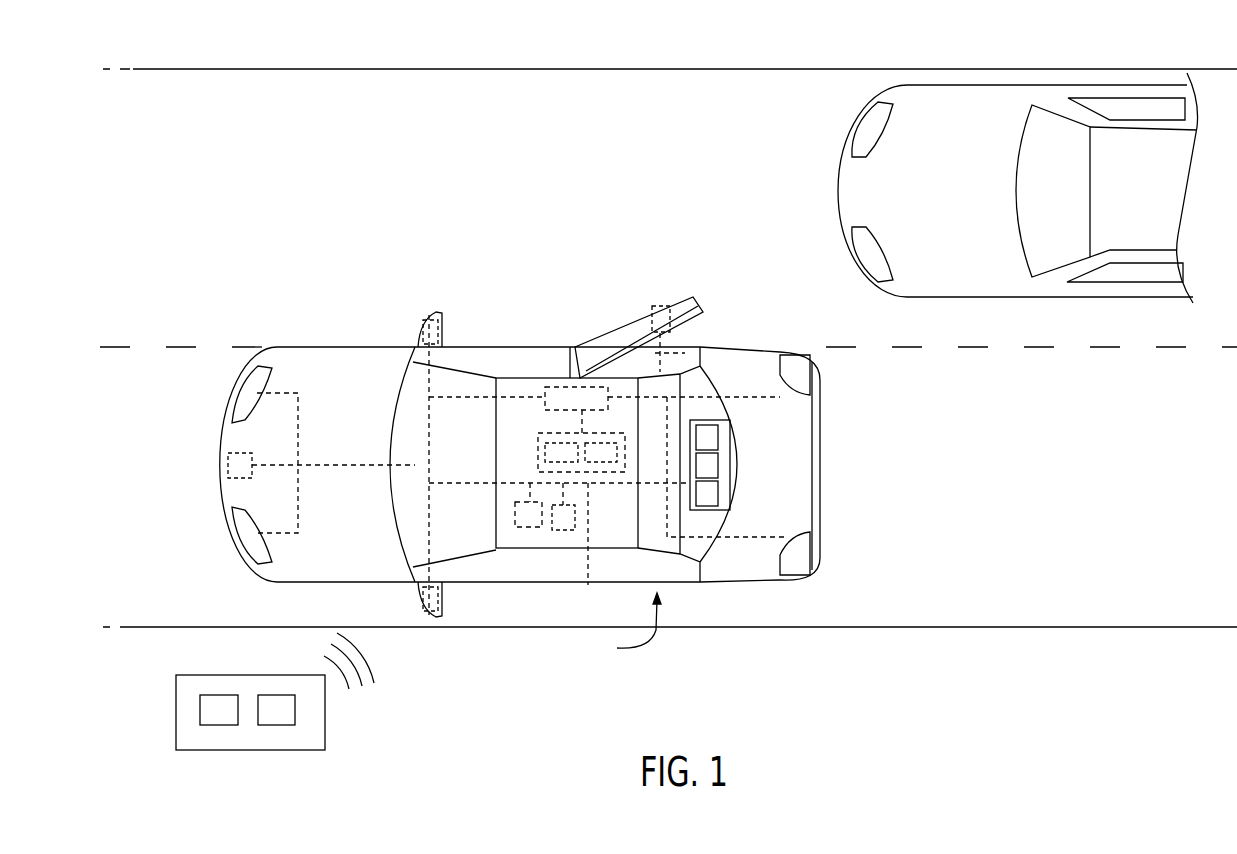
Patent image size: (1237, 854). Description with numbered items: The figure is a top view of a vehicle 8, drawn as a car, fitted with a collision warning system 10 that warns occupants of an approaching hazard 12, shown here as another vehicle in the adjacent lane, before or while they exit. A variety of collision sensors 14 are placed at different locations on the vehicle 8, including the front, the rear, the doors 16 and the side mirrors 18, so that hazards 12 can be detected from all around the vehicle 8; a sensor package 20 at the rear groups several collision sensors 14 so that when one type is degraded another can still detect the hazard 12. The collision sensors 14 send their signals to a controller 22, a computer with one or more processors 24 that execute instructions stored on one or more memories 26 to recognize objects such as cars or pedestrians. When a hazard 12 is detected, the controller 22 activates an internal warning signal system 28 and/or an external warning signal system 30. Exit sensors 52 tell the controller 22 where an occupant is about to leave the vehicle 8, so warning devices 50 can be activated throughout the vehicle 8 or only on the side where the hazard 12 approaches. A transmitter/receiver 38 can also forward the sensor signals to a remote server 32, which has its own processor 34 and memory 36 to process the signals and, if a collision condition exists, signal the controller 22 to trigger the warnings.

The vehicle 8 is at (515, 314).
The collision warning system 10 is at (628, 627).
The approaching hazard 12 is at (823, 132).
The collision sensors 14 is at (226, 466).
The door 16 is at (630, 328).
The side mirror 18 is at (432, 316).
The sensor package 20 is at (725, 418).
The controller 22 is at (587, 548).
The processor 24 is at (545, 447).
The memory 26 is at (598, 472).
The internal warning signal system 28 is at (527, 530).
The external warning signal system 30 is at (312, 318).
The remote server 32 is at (325, 715).
The processor 34 is at (218, 695).
The memory 36 is at (275, 695).
The transmitter/receiver 38 is at (558, 385).
The warning device 50 is at (252, 387).
The exit sensor 52 is at (563, 531).